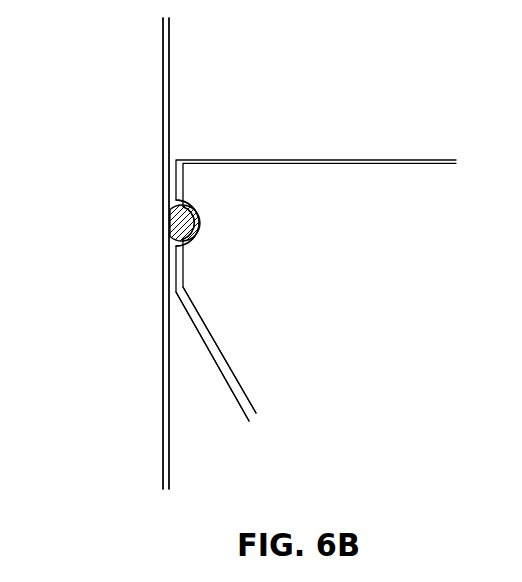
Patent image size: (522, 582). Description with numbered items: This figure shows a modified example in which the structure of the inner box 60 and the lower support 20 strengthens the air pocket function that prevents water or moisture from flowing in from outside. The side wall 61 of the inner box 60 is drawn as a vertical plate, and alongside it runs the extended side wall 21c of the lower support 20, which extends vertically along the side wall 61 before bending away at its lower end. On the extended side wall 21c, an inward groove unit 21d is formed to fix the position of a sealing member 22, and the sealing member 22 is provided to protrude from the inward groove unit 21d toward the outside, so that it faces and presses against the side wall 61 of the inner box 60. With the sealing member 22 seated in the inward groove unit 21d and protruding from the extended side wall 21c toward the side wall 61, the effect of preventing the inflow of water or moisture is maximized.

The lower support 20 is at (327, 159).
The extended side wall 21c is at (181, 275).
The inward groove unit 21d is at (200, 223).
The sealing member 22 is at (183, 222).
The inner box 60 is at (88, 253).
The side wall 61 is at (163, 92).